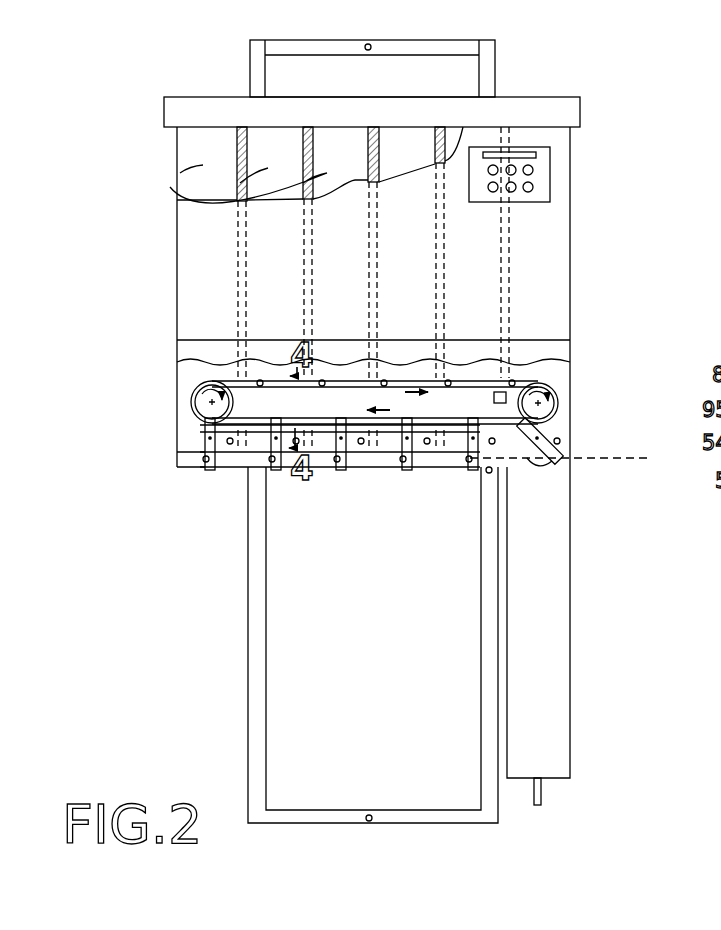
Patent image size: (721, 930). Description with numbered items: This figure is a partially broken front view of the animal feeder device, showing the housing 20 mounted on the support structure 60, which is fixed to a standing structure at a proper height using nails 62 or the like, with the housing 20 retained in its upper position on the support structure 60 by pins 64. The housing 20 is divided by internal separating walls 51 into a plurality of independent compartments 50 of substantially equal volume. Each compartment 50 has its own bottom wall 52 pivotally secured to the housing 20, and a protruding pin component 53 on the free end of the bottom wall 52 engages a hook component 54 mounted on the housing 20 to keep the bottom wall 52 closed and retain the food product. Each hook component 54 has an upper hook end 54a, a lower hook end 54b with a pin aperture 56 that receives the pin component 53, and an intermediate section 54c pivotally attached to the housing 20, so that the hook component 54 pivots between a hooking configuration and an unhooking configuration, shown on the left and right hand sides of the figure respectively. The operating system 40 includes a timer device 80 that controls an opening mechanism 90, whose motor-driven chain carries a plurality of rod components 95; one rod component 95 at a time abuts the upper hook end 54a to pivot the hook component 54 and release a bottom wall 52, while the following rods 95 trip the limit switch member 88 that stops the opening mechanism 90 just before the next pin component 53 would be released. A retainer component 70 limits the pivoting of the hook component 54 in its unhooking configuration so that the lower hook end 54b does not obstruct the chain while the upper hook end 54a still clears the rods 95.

The housing 20 is at (571, 238).
The operating system 40 is at (621, 290).
The compartments 50 is at (350, 180).
The internal separating walls 51 is at (327, 173).
The bottom wall 52 is at (176, 462).
The pin component 53 is at (539, 806).
The hook component 54 is at (352, 469).
The second or upper hook end 54a is at (554, 426).
The first or lower hook end 54b is at (565, 449).
The intermediate section 54c is at (534, 442).
The pin aperture 56 is at (556, 463).
The support structure 60 is at (492, 57).
The nails 62 is at (371, 44).
The pins 64 is at (487, 473).
The retainer component 70 is at (561, 438).
The timer device 80 is at (543, 173).
The limit switch member 88 is at (498, 392).
The opening mechanism 90 is at (621, 355).
The rod components 95 is at (386, 380).